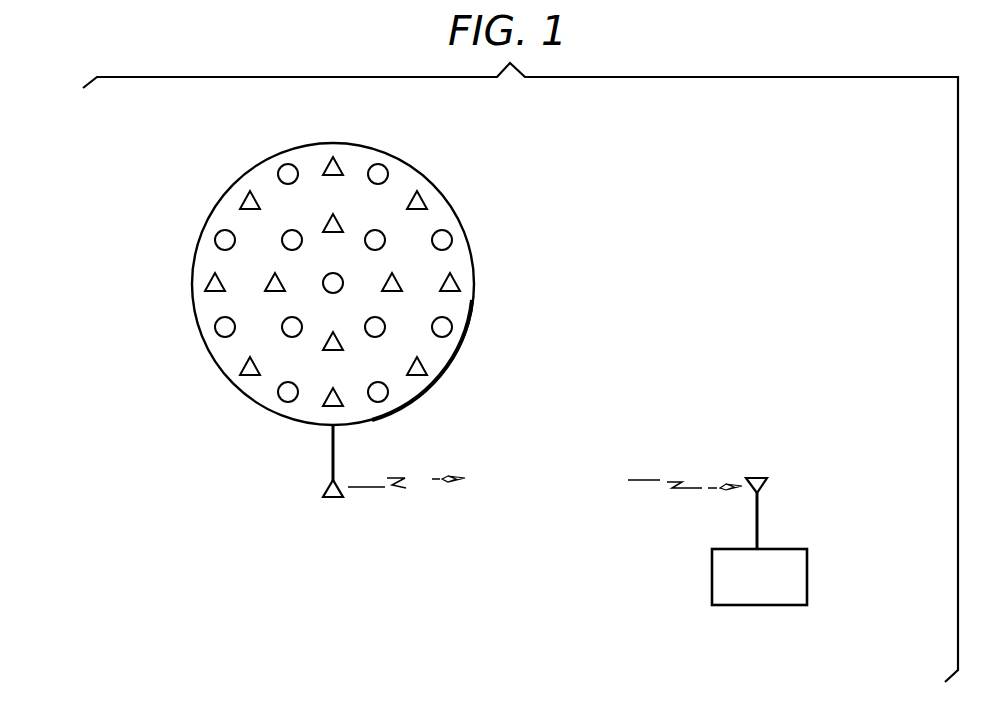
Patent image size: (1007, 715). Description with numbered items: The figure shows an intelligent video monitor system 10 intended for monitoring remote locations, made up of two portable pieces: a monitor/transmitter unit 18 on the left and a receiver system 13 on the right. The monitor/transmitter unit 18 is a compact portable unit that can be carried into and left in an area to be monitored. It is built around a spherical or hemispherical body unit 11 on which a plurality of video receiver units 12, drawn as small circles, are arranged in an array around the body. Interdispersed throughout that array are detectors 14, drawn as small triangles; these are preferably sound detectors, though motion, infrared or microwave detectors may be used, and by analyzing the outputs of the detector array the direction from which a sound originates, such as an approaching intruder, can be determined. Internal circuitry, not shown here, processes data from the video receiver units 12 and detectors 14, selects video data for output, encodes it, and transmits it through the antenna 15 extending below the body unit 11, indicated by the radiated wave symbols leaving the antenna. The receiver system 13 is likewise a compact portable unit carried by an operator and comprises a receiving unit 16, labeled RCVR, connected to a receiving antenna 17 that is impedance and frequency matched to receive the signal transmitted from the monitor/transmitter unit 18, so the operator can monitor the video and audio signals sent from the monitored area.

The video monitor system 10 is at (743, 252).
The spherical body unit 11 is at (195, 243).
The video receiver units 12 is at (415, 372).
The receiver system 13 is at (816, 578).
The detectors 14 is at (445, 328).
The antenna 15 is at (325, 488).
The receiving unit 16 is at (757, 605).
The receiving antenna 17 is at (763, 485).
The monitor/transmitter unit 18 is at (330, 304).